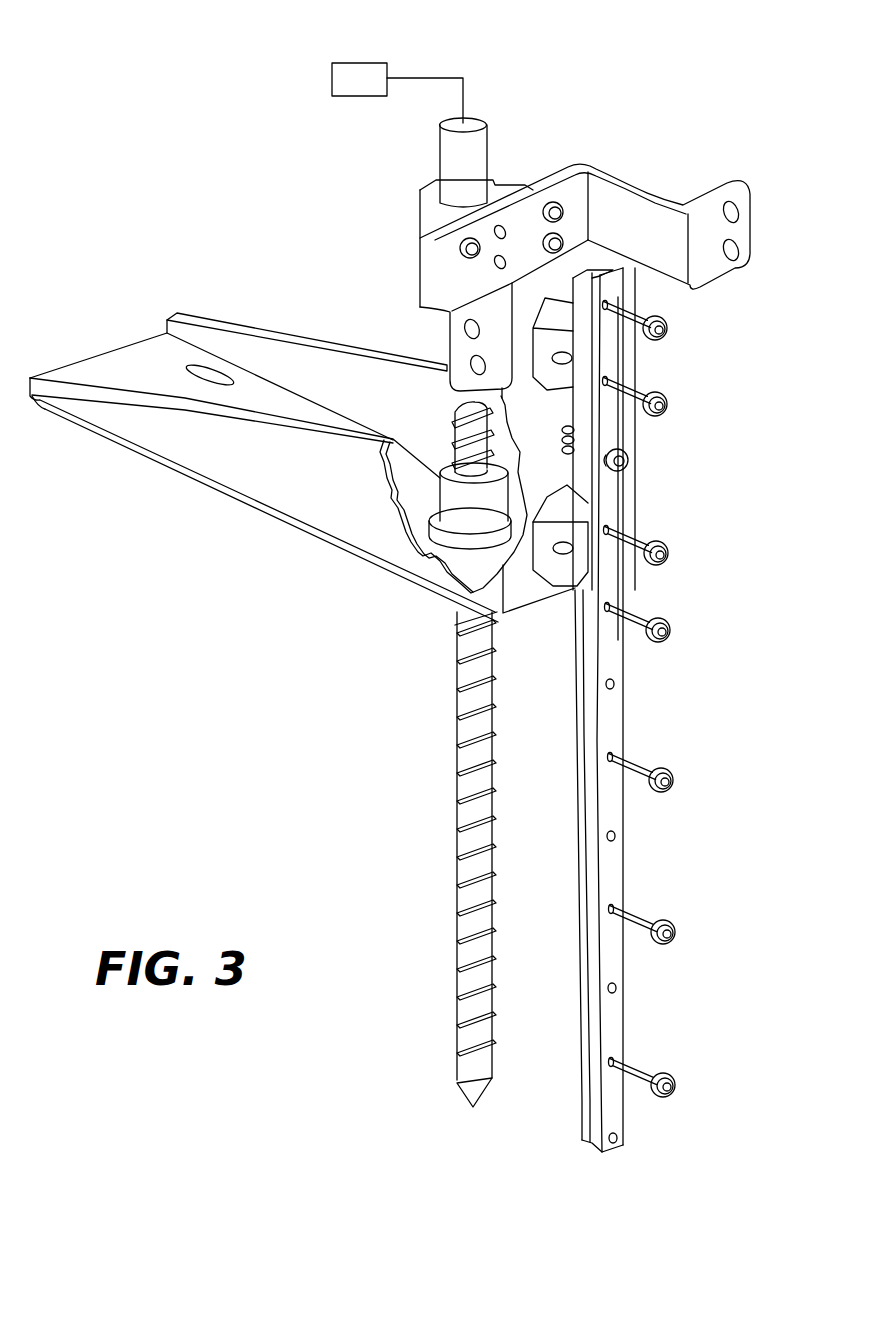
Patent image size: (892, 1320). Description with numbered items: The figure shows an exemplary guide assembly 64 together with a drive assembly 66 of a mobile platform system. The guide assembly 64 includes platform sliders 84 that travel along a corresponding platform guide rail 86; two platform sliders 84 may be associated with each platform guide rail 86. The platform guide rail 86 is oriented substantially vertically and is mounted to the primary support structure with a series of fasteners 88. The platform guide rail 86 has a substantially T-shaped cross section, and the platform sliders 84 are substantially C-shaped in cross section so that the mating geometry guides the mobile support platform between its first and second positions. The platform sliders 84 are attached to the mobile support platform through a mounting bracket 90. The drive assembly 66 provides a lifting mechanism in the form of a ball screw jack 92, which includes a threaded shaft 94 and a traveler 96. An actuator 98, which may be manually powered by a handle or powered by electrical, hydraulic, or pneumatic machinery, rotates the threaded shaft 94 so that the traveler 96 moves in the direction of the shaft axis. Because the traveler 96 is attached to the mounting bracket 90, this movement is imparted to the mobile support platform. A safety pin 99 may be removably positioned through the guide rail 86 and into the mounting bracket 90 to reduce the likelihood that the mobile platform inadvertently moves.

The guide assembly 64 is at (703, 391).
The drive assembly 66 is at (614, 122).
The platform slider 84 is at (577, 367).
The platform guide rail 86 is at (627, 713).
The fastener 88 is at (665, 945).
The mounting bracket 90 is at (147, 356).
The ball screw jack 92 is at (373, 650).
The threaded shaft 94 is at (448, 877).
The traveler 96 is at (430, 473).
The actuator 98 is at (376, 63).
The safety pin 99 is at (629, 460).